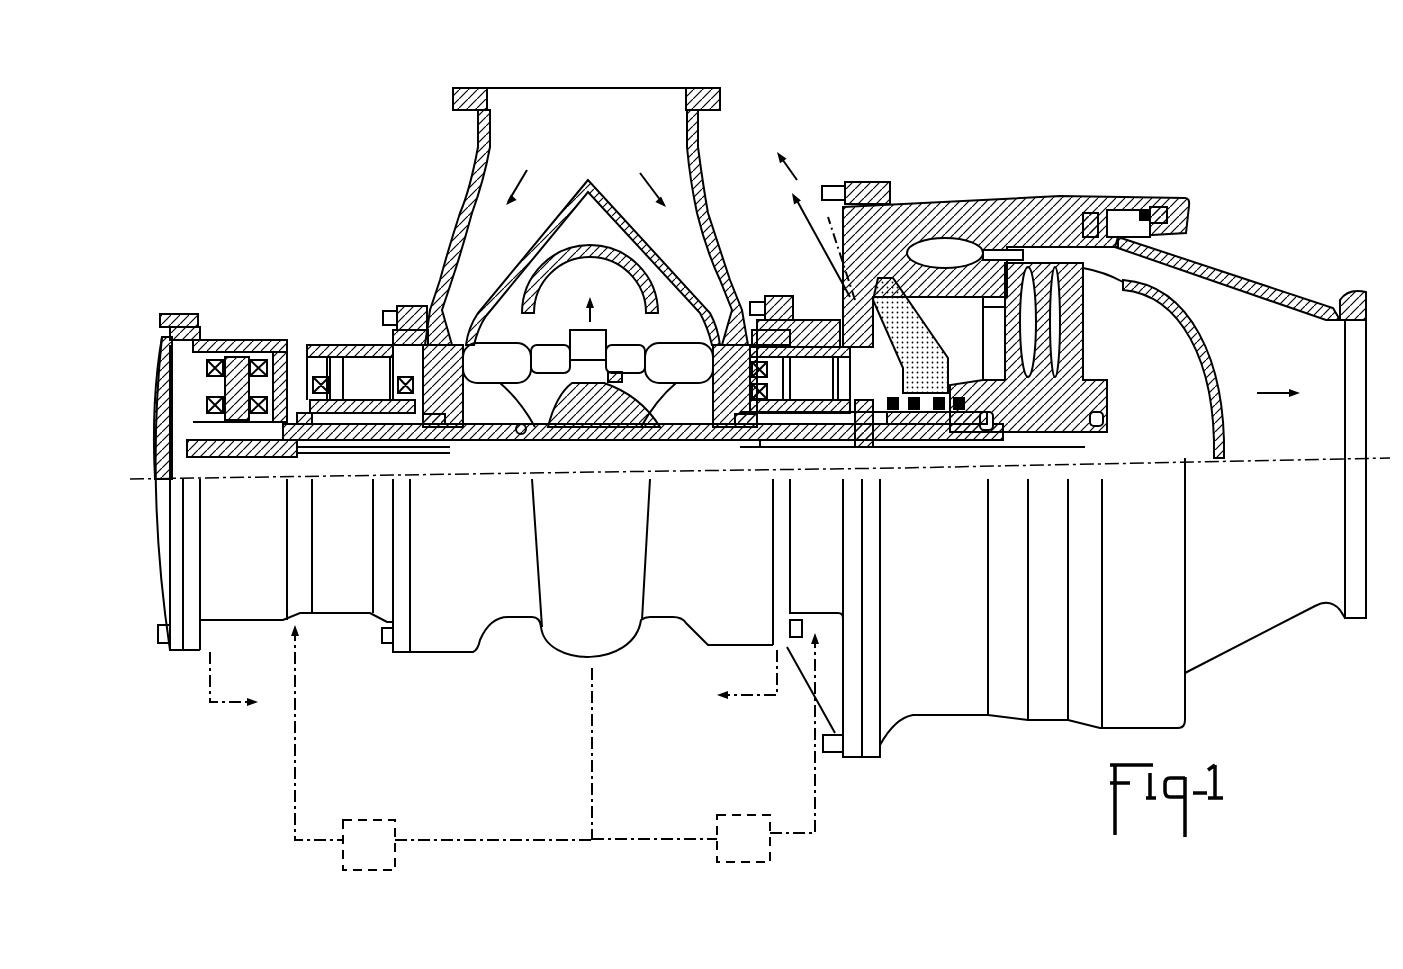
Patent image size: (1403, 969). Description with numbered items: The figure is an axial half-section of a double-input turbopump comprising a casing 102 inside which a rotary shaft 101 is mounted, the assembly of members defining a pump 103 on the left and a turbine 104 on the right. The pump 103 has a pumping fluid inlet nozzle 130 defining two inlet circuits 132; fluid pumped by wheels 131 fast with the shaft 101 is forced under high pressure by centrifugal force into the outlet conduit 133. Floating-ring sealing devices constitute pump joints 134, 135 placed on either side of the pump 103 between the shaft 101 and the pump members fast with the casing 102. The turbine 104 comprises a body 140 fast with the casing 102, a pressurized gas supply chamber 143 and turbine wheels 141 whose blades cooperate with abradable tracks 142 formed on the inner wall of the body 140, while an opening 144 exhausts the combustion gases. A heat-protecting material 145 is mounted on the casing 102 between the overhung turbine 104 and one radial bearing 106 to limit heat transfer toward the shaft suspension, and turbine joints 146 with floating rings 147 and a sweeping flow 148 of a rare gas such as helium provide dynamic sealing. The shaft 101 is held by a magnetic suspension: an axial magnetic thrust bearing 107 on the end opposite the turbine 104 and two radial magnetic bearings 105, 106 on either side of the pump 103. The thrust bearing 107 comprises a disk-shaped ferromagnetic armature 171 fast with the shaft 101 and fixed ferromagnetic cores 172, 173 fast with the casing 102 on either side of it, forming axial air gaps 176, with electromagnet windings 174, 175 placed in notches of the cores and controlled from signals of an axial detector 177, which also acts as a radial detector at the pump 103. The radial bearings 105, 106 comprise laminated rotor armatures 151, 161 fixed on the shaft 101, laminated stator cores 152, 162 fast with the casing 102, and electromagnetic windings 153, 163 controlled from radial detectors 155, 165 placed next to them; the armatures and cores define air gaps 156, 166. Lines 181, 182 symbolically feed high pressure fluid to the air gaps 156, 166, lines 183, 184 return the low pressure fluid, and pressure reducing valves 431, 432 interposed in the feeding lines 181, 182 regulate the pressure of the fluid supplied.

The rotary shaft 101 is at (684, 460).
The casing 102 is at (772, 605).
The pump 103 is at (586, 79).
The turbine 104 is at (924, 631).
The radial magnetic bearing 105 is at (379, 307).
The radial magnetic bearing 106 is at (795, 290).
The axial magnetic thrust bearing 107 is at (240, 288).
The pumping fluid inlet nozzle 130 is at (478, 160).
The wheels 131 is at (519, 434).
The inlet circuits 132 is at (673, 258).
The outlet conduit 133 is at (597, 322).
The pump joint 134 is at (433, 441).
The pump joint 135 is at (727, 434).
The body 140 is at (963, 227).
The turbine wheels 141 is at (1073, 361).
The abradable tracks 142 is at (1062, 214).
The pressurized gas supply chamber 143 is at (928, 243).
The opening 144 is at (1270, 292).
The heat-protecting material 145 is at (885, 323).
The turbine joints 146 is at (950, 435).
The floating rings 147 is at (925, 414).
The sweeping flow 148 is at (800, 187).
The rotor armature 151 is at (347, 441).
The stator core 152 is at (352, 356).
The electromagnetic windings 153 is at (331, 386).
The radial detector 155 is at (296, 436).
The air gap 156 is at (366, 415).
The rotor armature 161 is at (812, 412).
The stator core 162 is at (800, 371).
The electromagnetic windings 163 is at (820, 338).
The radial detector 165 is at (865, 422).
The air gap 166 is at (775, 437).
The ferromagnetic armature 171 is at (234, 458).
The ferromagnetic core 172 is at (200, 383).
The ferromagnetic core 173 is at (270, 370).
The electromagnet winding 174 is at (205, 404).
The electromagnet winding 175 is at (262, 345).
The axial air gaps 176 is at (250, 380).
The axial detector 177 is at (618, 383).
The line 181 is at (483, 838).
The line 182 is at (637, 838).
The line 183 is at (235, 704).
The line 184 is at (775, 698).
The pressure reducing valve 431 is at (387, 858).
The pressure reducing valve 432 is at (763, 853).